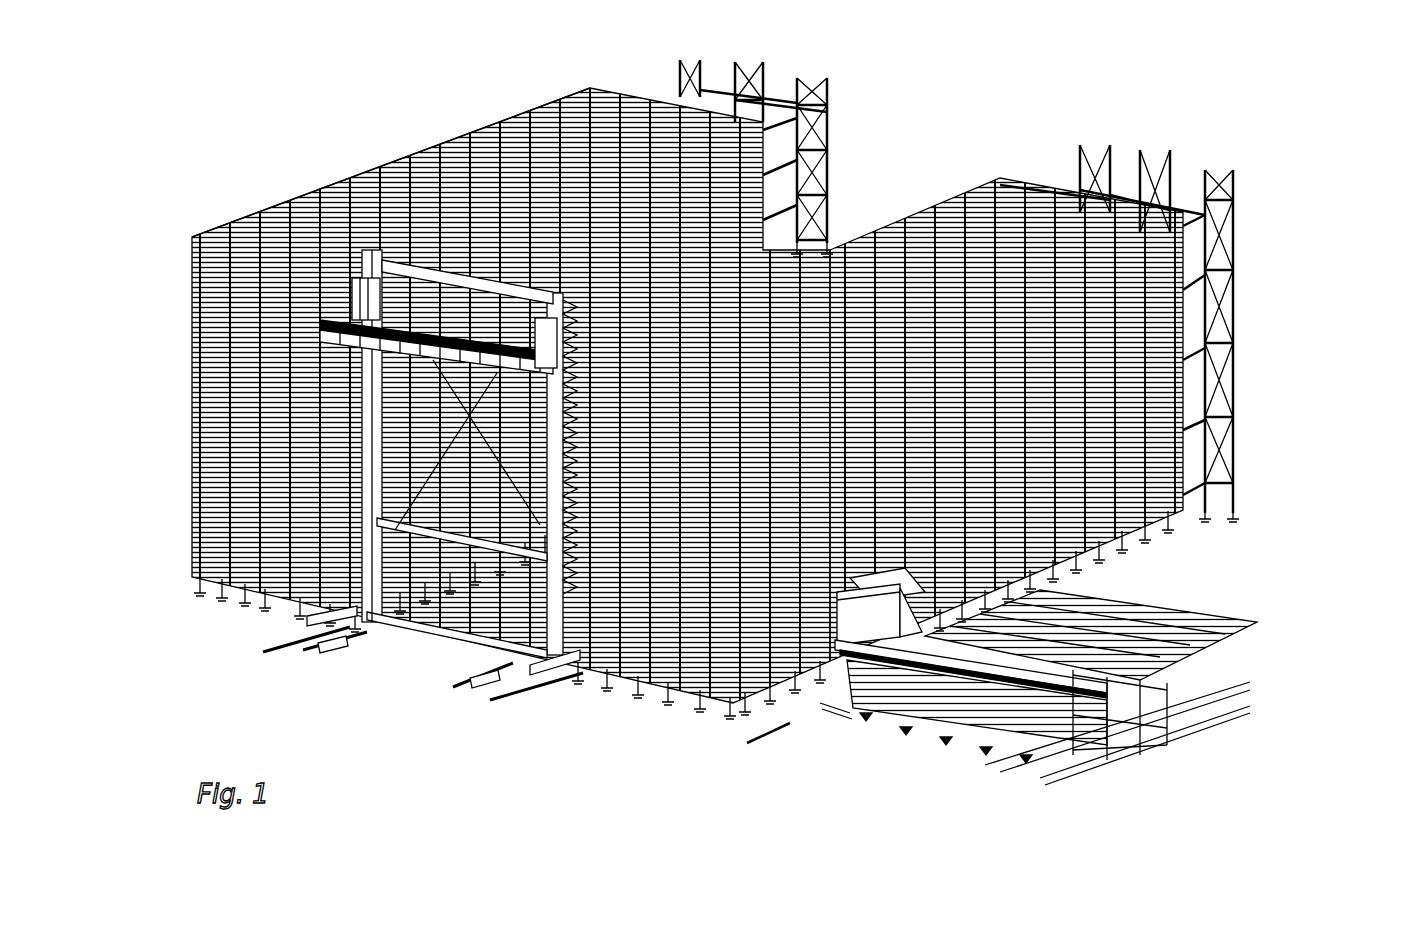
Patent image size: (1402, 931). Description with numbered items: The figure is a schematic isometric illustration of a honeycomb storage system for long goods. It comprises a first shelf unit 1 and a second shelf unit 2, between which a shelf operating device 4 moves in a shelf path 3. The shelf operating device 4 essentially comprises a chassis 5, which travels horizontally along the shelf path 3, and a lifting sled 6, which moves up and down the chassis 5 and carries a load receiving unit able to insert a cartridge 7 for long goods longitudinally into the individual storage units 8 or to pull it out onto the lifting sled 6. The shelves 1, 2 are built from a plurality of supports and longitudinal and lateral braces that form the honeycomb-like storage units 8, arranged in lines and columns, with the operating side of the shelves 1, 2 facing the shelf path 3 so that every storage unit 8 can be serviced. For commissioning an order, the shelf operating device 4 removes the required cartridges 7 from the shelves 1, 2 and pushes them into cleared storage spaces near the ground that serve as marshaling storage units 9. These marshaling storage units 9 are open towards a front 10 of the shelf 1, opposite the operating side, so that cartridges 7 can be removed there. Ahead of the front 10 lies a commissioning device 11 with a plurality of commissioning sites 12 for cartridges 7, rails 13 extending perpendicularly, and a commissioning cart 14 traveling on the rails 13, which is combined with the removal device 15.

The first shelf unit 1 is at (978, 178).
The second shelf unit 2 is at (515, 118).
The shelf path 3 is at (347, 688).
The shelf operating device 4 is at (432, 630).
The chassis 5 is at (550, 593).
The lifting sled 6 is at (292, 206).
The cartridge 7 is at (1173, 614).
The storage unit 8 is at (260, 603).
The marshaling storage unit 9 is at (773, 690).
The front 10 is at (1268, 420).
The commissioning device 11 is at (1315, 778).
The commissioning site 12 is at (1240, 668).
The rail 13 is at (1240, 708).
The commissioning cart 14 is at (1211, 738).
The removal device 15 is at (1165, 757).